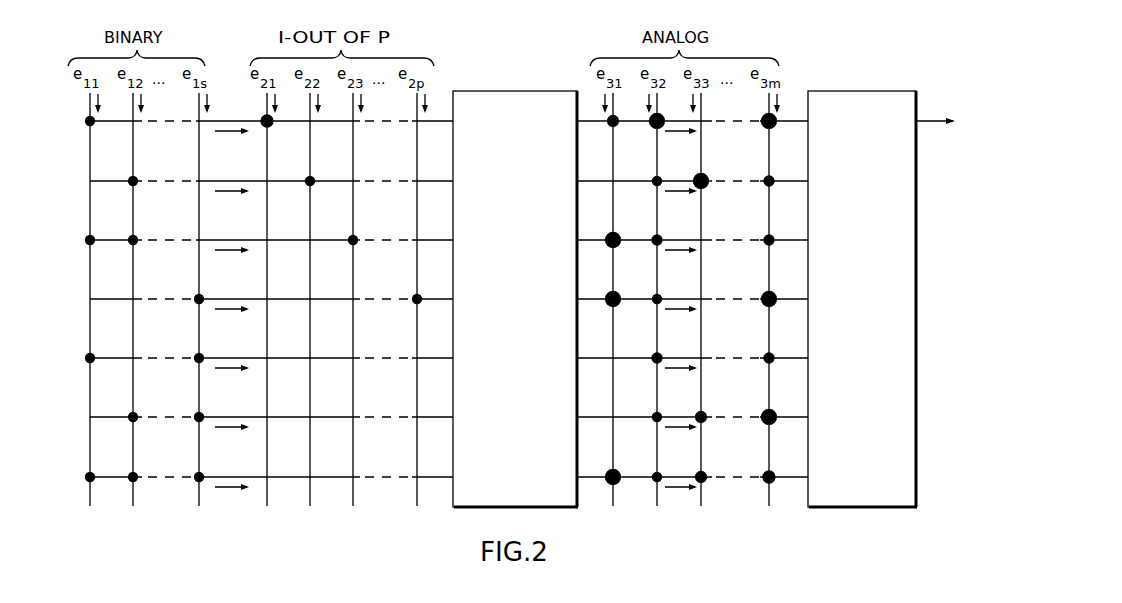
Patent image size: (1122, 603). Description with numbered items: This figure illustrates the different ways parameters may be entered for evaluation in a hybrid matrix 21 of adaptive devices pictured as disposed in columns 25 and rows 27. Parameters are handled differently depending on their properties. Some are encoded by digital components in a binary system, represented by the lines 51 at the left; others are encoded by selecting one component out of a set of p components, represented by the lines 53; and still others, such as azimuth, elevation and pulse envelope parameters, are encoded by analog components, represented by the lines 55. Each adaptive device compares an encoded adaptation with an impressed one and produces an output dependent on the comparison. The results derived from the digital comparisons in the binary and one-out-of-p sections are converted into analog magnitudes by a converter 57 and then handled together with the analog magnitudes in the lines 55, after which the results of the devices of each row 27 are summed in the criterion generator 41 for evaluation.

The matrix 21 is at (456, 79).
The columns 25 is at (769, 108).
The rows 27 is at (247, 477).
The criterion generator 41 is at (868, 91).
The lines 51 is at (160, 535).
The lines 53 is at (362, 535).
The lines 55 is at (720, 535).
The converter 57 is at (513, 91).